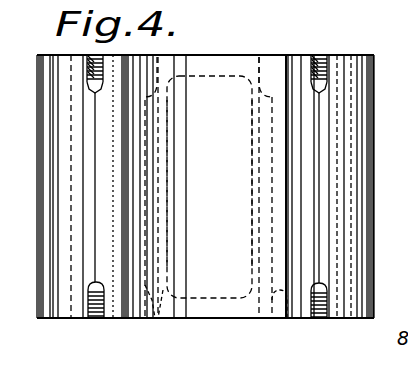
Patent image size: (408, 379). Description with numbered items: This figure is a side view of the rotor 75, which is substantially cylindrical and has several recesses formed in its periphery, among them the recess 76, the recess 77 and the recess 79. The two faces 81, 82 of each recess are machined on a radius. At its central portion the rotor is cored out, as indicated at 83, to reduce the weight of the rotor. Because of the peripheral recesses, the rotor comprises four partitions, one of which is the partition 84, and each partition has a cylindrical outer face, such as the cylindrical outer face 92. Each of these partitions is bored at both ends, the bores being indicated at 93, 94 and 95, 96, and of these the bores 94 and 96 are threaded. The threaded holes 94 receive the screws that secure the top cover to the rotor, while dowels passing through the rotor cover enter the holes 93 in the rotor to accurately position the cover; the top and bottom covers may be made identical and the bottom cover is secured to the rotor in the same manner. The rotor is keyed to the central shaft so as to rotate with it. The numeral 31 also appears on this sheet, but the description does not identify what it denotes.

The housing 31 is at (222, 159).
The rotor 75 is at (361, 321).
The recess 76 is at (236, 156).
The recess 77 is at (153, 303).
The recess 79 is at (258, 57).
The face of recess 81 is at (127, 271).
The face of recess 82 is at (289, 243).
The cored-out central portion 83 is at (252, 223).
The partition 84 is at (40, 302).
The cylindrical outer face 92 is at (373, 173).
The bore 93 is at (171, 62).
The threaded bore 94 is at (97, 54).
The bore 95 is at (130, 320).
The threaded bore 96 is at (91, 320).